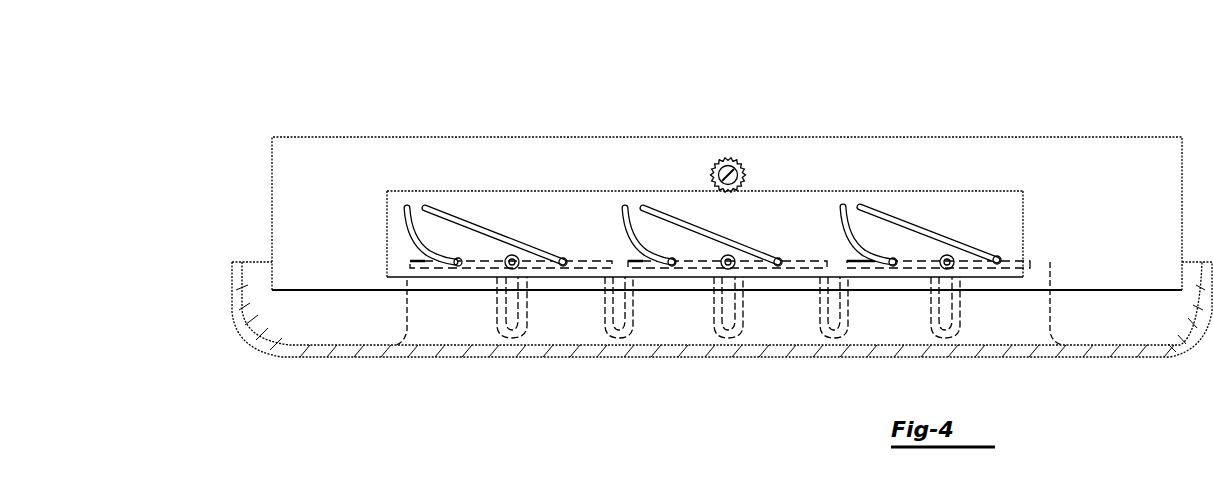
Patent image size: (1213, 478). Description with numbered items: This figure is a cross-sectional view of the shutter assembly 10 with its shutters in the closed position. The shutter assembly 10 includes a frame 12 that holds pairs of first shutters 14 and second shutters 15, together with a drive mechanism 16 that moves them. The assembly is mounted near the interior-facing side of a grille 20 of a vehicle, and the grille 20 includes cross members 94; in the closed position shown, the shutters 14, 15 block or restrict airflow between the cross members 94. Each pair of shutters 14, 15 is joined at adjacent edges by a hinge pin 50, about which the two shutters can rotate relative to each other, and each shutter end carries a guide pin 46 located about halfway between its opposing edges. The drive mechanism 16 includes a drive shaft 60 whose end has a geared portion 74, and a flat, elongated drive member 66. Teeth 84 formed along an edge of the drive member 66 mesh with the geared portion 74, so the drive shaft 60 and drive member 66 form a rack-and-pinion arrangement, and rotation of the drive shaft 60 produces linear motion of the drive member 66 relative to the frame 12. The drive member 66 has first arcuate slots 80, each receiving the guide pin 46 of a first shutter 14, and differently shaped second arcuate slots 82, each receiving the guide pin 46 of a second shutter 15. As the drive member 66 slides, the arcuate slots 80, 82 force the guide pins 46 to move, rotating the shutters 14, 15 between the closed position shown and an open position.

The shutter assembly 10 is at (978, 96).
The frame 12 is at (377, 132).
The first shutter 14 is at (916, 258).
The second shutter 15 is at (1043, 262).
The drive mechanism 16 is at (788, 166).
The grille 20 is at (1094, 362).
The guide pin 46 is at (1000, 257).
The hinge pin 50 is at (946, 254).
The drive shaft 60 is at (727, 150).
The drive member 66 is at (446, 185).
The geared portion 74 is at (712, 168).
The first arcuate slot 80 is at (845, 204).
The second arcuate slot 82 is at (972, 253).
The teeth 84 is at (653, 190).
The cross member 94 is at (958, 307).